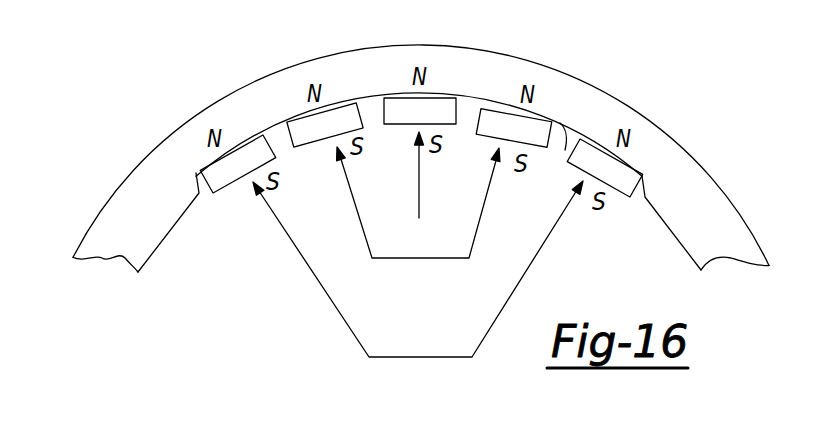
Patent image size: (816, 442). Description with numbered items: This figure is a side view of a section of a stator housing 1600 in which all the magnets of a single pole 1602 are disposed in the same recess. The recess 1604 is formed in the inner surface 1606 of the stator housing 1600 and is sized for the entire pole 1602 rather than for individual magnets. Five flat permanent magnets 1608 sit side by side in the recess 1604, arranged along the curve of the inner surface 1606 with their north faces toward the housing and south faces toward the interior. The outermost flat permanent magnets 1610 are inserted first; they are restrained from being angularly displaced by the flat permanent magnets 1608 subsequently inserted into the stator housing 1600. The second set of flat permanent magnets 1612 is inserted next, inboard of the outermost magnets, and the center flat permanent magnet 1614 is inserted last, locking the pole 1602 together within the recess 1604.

The stator housing 1600 is at (118, 192).
The pole 1602 is at (258, 268).
The recess 1604 is at (565, 150).
The inner surface 1606 is at (684, 243).
The flat permanent magnets 1608 is at (302, 124).
The outermost flat permanent magnets 1610 is at (419, 357).
The second set of flat permanent magnets 1612 is at (418, 259).
The center flat permanent magnet 1614 is at (418, 192).